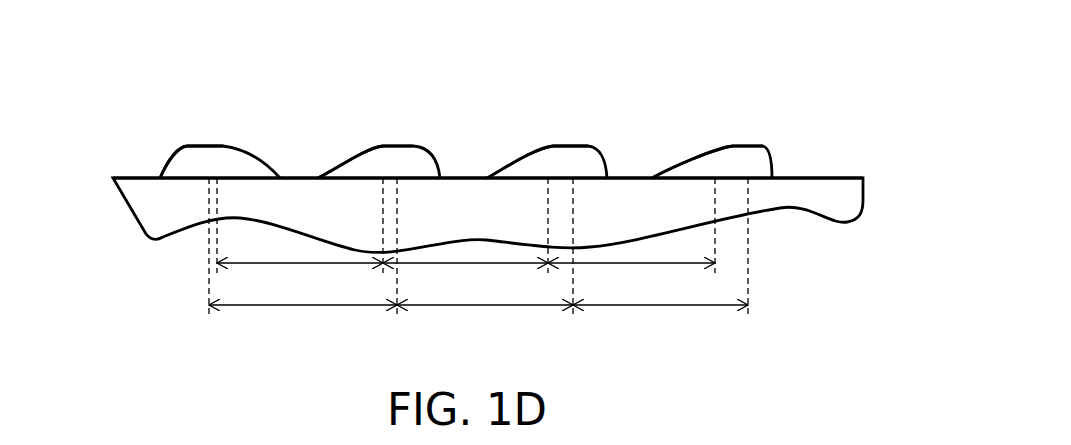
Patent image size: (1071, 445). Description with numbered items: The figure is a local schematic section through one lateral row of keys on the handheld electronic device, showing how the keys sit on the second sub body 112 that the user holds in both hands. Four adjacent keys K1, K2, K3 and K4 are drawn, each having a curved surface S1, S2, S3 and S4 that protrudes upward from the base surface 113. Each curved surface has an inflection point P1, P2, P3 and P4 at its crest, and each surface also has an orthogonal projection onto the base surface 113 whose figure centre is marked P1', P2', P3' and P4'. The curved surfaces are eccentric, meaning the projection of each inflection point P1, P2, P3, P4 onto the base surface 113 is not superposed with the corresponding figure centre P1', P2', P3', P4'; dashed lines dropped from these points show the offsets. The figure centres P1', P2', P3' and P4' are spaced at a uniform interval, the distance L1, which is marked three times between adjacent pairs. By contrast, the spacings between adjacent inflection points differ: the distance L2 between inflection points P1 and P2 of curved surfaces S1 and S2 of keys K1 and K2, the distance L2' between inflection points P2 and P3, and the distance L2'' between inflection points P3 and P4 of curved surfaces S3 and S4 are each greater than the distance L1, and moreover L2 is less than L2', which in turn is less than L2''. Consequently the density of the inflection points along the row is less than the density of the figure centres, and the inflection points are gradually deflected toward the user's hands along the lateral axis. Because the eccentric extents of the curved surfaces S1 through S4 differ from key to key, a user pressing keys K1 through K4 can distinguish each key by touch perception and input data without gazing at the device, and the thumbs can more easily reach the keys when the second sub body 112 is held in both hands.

The second sub body 112 is at (140, 210).
The base surface 113 is at (135, 176).
The key K1 is at (150, 83).
The key K2 is at (365, 82).
The key K3 is at (532, 82).
The key K4 is at (708, 82).
The curved surface S1 is at (172, 152).
The curved surface S2 is at (342, 156).
The curved surface S3 is at (503, 160).
The curved surface S4 is at (668, 162).
The inflection point P1 is at (200, 198).
The inflection point P2 is at (407, 198).
The inflection point P3 is at (576, 198).
The inflection point P4 is at (754, 198).
The figure centre P1' is at (248, 191).
The figure centre P2' is at (365, 188).
The figure centre P3' is at (527, 188).
The figure centre P4' is at (692, 188).
The distance L1 is at (466, 278).
The distance L2 is at (303, 323).
The distance L2' is at (485, 323).
The distance L2'' is at (660, 323).